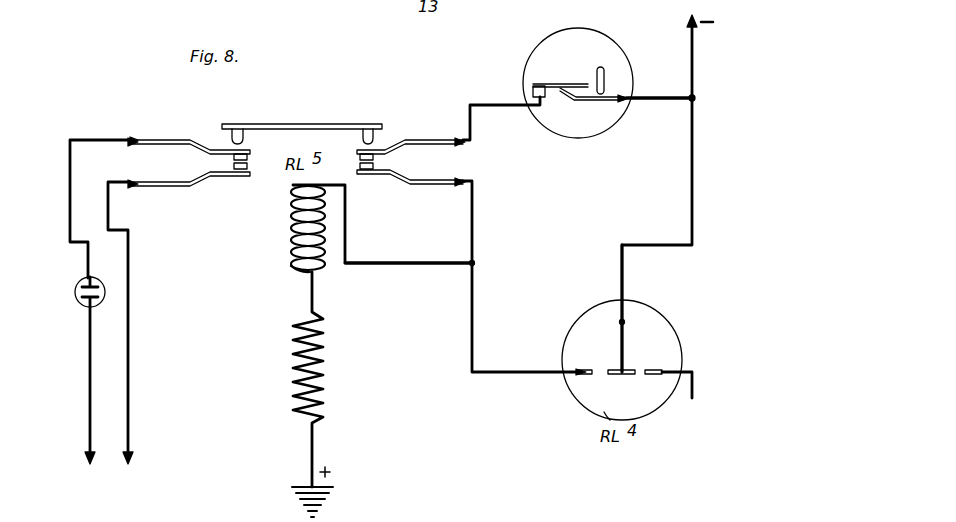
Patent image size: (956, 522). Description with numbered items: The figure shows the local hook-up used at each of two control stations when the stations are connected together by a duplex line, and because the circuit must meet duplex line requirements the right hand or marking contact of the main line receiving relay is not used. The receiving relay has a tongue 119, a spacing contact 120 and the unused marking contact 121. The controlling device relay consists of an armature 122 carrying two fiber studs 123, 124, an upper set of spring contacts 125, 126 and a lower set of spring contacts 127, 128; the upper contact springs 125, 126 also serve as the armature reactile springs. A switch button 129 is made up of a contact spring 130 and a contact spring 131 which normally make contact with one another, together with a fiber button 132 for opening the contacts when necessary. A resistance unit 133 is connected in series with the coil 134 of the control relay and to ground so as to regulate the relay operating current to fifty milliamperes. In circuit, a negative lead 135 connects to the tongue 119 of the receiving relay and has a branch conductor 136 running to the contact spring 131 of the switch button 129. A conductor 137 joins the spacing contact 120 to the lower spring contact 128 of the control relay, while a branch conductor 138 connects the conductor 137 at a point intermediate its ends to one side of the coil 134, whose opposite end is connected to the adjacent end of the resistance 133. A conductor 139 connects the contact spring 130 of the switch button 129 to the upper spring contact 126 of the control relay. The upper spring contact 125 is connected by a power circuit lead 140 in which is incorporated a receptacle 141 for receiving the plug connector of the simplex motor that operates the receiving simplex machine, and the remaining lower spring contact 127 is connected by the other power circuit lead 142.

The tongue 119 is at (625, 332).
The spacing contact 120 is at (585, 376).
The marking contact 121 is at (656, 368).
The armature 122 is at (304, 125).
The fiber stud 123 is at (232, 140).
The fiber stud 124 is at (362, 140).
The upper spring contact 125 is at (160, 135).
The upper spring contact 126 is at (420, 140).
The lower spring contact 127 is at (172, 184).
The lower spring contact 128 is at (425, 185).
The switch button 129 is at (592, 42).
The contact spring 130 is at (556, 83).
The contact spring 131 is at (590, 100).
The fiber button 132 is at (606, 80).
The resistance unit 133 is at (326, 356).
The coil 134 is at (290, 218).
The negative lead 135 is at (695, 148).
The branch conductor 136 is at (656, 105).
The conductor 137 is at (473, 300).
The branch conductor 138 is at (406, 266).
The conductor 139 is at (488, 94).
The power circuit lead 140 is at (88, 131).
The receptacle 141 is at (76, 298).
The power circuit lead 142 is at (130, 358).